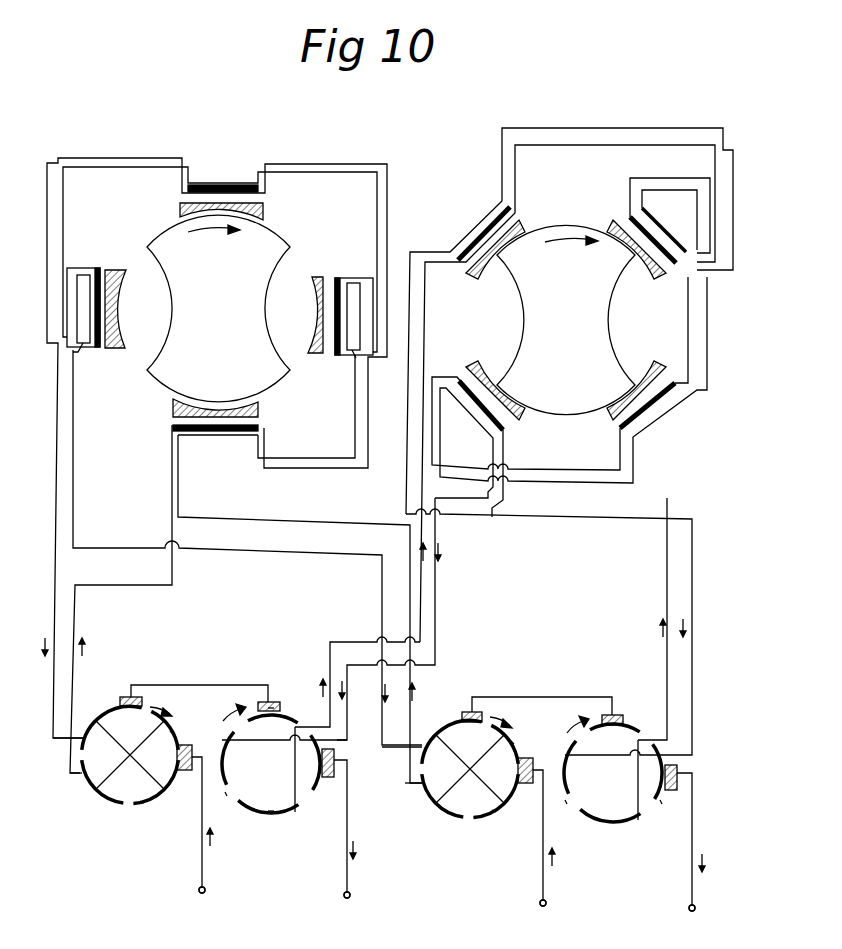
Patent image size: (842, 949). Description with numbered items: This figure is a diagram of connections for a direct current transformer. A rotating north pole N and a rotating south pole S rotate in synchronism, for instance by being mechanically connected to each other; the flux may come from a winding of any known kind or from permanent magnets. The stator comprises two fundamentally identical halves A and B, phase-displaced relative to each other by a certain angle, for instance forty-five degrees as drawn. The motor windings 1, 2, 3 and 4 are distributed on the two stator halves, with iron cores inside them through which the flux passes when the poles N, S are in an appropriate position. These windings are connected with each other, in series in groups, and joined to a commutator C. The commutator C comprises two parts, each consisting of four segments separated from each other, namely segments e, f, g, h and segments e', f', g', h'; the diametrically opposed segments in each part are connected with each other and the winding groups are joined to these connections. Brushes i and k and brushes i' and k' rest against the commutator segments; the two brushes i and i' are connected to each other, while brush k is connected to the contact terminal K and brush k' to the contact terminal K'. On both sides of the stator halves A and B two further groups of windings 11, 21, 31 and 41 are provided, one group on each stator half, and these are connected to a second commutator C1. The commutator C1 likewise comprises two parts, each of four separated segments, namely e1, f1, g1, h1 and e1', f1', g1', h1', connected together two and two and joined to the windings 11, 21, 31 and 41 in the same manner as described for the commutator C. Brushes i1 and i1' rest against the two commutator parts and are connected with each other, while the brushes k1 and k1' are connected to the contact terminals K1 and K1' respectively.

The stator half A is at (232, 460).
The stator half B is at (493, 424).
The rotating south pole S is at (214, 310).
The rotating north pole N is at (566, 320).
The motor winding 1 is at (212, 186).
The winding 11 is at (249, 186).
The motor winding 2 is at (340, 280).
The winding 21 is at (352, 352).
The motor winding 3 is at (200, 433).
The winding 31 is at (231, 437).
The motor winding 4 is at (95, 283).
The winding 41 is at (83, 344).
The commutator C is at (248, 721).
The commutator C1 is at (563, 761).
The brush i' is at (186, 689).
The commutator segment e is at (280, 700).
The brush i is at (274, 688).
The commutator segment h' is at (80, 714).
The commutator segment g' is at (73, 801).
The commutator segment f' is at (151, 819).
The commutator segment e' is at (184, 719).
The brush k' is at (195, 806).
The contact terminal K' is at (197, 902).
The commutator segment h is at (226, 809).
The commutator segment g is at (277, 826).
The commutator segment f is at (327, 779).
The brush k is at (348, 819).
The contact terminal K is at (342, 906).
The brush i1' is at (531, 702).
The commutator segment h1' is at (411, 729).
The commutator segment e1' is at (527, 727).
The brush k1' is at (539, 820).
The contact terminal K1' is at (548, 917).
The commutator segment g1' is at (428, 816).
The commutator segment f1' is at (505, 823).
The commutator segment h1 is at (571, 818).
The commutator segment g1 is at (616, 840).
The commutator segment e1 is at (652, 619).
The brush i1 is at (618, 707).
The commutator segment f1 is at (667, 820).
The brush k1 is at (694, 830).
The contact terminal K1 is at (692, 922).